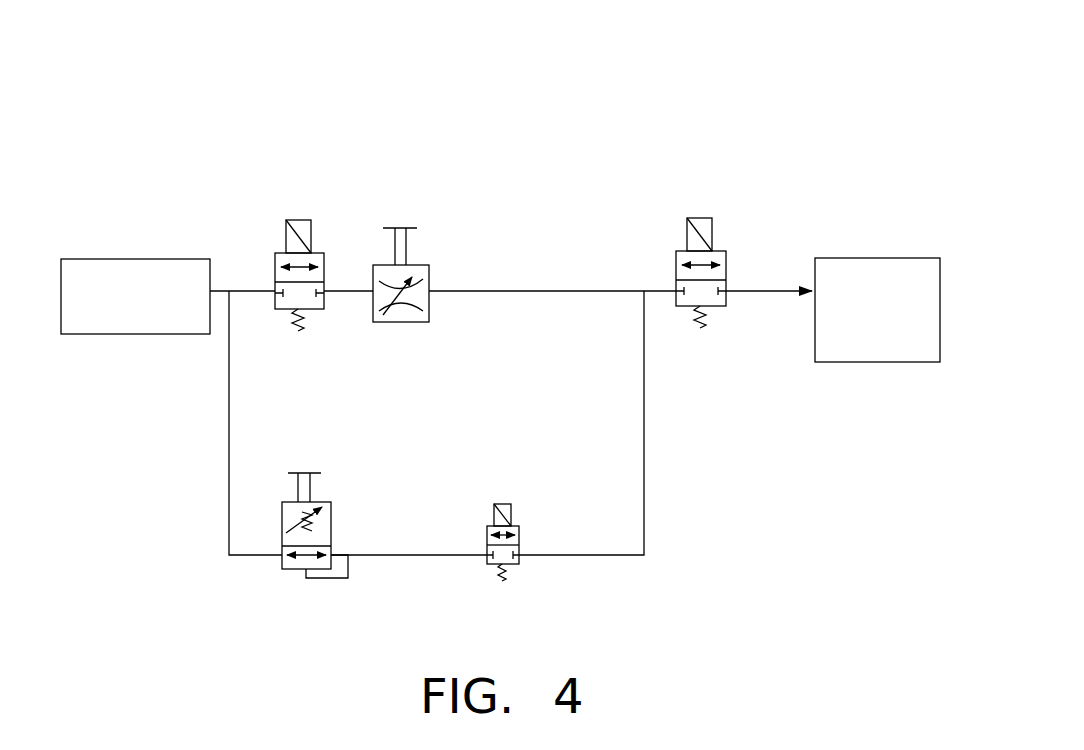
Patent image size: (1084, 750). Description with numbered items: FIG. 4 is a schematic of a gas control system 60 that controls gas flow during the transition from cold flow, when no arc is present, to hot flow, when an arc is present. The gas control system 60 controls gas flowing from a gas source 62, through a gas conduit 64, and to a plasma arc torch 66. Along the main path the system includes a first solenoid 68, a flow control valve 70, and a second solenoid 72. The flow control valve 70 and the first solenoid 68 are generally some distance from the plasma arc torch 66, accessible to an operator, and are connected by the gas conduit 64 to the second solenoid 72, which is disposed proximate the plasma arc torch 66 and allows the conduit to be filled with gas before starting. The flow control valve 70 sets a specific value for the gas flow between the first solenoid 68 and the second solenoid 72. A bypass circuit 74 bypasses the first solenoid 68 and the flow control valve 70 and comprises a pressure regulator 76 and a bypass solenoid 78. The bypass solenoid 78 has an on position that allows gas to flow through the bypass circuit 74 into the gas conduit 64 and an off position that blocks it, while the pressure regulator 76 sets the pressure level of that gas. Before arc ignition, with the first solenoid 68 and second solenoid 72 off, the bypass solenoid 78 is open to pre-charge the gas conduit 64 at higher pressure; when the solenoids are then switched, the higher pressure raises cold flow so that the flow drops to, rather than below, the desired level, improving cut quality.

The gas control system 60 is at (600, 67).
The gas source 62 is at (172, 259).
The gas conduit 64 is at (662, 291).
The plasma arc torch 66 is at (860, 362).
The first solenoid 68 is at (327, 177).
The flow control valve 70 is at (430, 284).
The second solenoid 72 is at (715, 308).
The bypass circuit 74 is at (647, 472).
The pressure regulator 76 is at (292, 570).
The bypass solenoid 78 is at (513, 567).